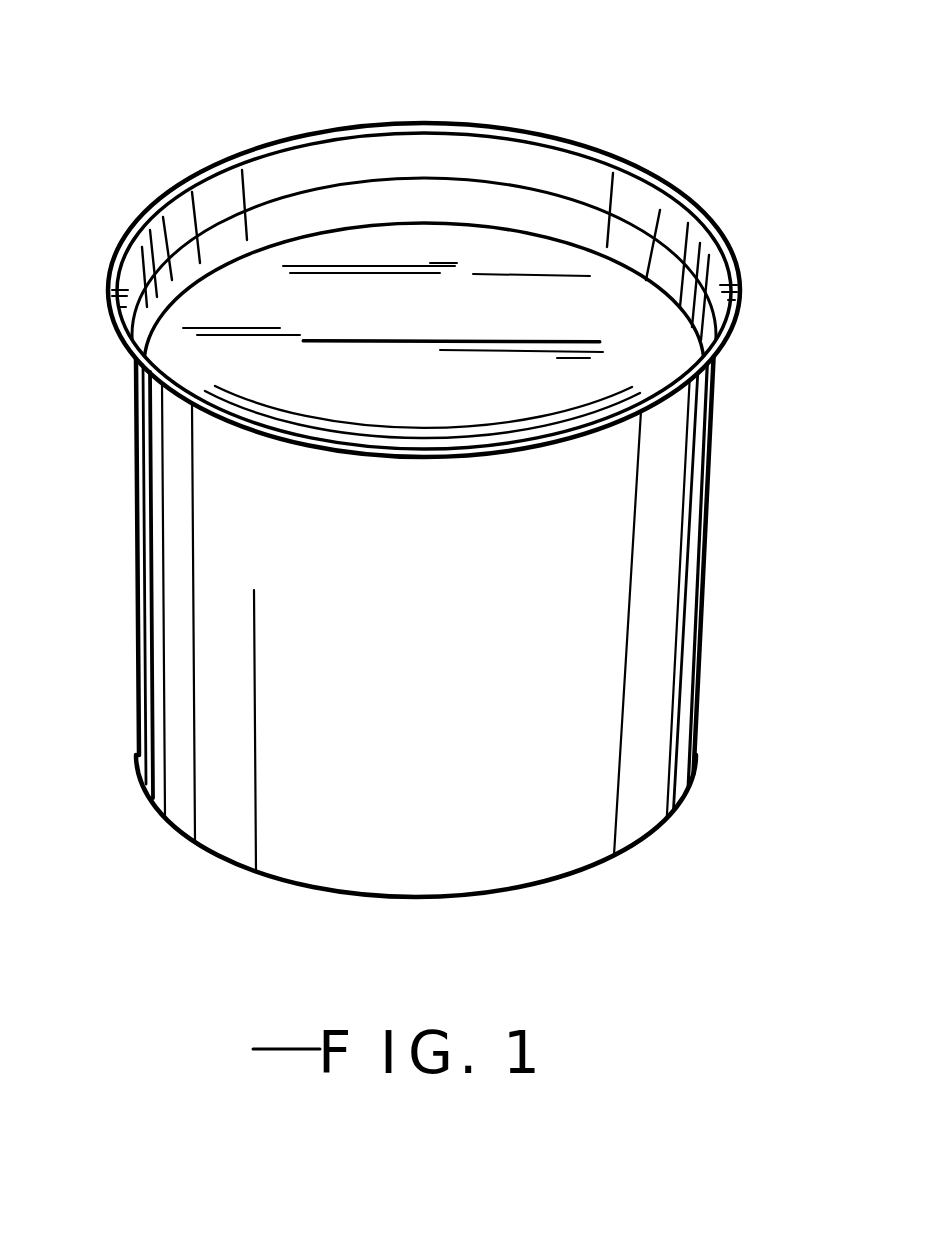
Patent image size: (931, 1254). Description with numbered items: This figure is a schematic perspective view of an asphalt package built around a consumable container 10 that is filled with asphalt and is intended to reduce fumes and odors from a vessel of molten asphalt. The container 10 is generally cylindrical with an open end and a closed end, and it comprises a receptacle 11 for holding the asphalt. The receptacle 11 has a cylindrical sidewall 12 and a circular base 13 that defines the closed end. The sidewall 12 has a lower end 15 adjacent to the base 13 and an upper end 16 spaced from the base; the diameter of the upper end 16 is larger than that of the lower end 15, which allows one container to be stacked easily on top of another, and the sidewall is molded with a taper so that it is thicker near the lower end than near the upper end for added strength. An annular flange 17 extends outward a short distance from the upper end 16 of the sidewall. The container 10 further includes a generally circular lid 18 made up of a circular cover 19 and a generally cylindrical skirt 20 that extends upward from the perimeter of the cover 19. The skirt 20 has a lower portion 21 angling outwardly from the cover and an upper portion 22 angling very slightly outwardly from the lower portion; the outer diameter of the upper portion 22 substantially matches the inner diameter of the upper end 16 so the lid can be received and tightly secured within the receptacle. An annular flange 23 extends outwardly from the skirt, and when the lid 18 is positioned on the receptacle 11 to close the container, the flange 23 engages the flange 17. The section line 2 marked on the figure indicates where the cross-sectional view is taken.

The consumable container 10 is at (196, 85).
The receptacle 11 is at (134, 590).
The cylindrical sidewall 12 is at (663, 557).
The circular base 13 is at (538, 890).
The lower end 15 is at (695, 757).
The upper end 16 is at (712, 370).
The annular flange 17 is at (508, 455).
The lid 18 is at (578, 145).
The circular cover 19 is at (418, 323).
The cylindrical skirt 20 is at (380, 150).
The lower portion 21 is at (320, 205).
The upper portion 22 is at (558, 175).
The annular flange 23 is at (662, 192).
The section line 2- 2 is at (27, 265).